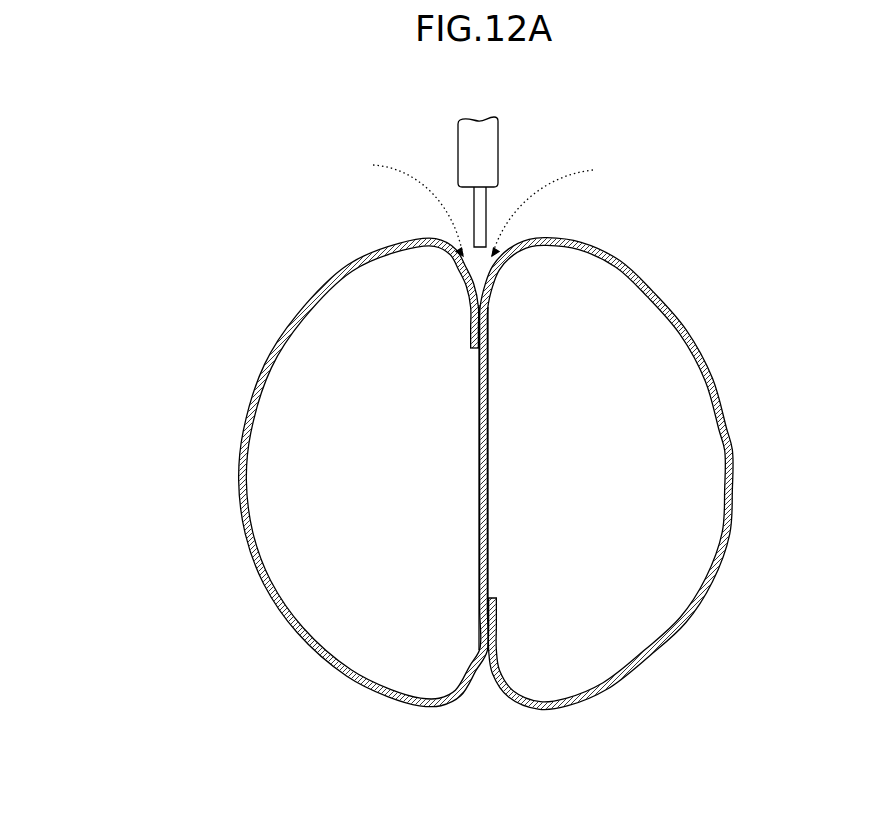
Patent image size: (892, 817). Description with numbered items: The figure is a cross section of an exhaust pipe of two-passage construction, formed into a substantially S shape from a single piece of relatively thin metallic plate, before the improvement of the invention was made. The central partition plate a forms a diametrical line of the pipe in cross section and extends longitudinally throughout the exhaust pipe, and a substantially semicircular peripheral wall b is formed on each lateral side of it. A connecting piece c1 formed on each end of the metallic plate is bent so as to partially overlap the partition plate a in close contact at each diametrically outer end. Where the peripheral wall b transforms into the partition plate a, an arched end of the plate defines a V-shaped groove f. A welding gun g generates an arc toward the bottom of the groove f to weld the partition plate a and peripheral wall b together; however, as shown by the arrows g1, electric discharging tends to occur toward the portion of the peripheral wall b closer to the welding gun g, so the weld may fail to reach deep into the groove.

The central partition plate a is at (488, 444).
The peripheral wall b is at (288, 322).
The connecting piece c1 is at (472, 305).
The groove f is at (479, 262).
The welding gun g is at (493, 163).
The arrows g1 is at (482, 204).